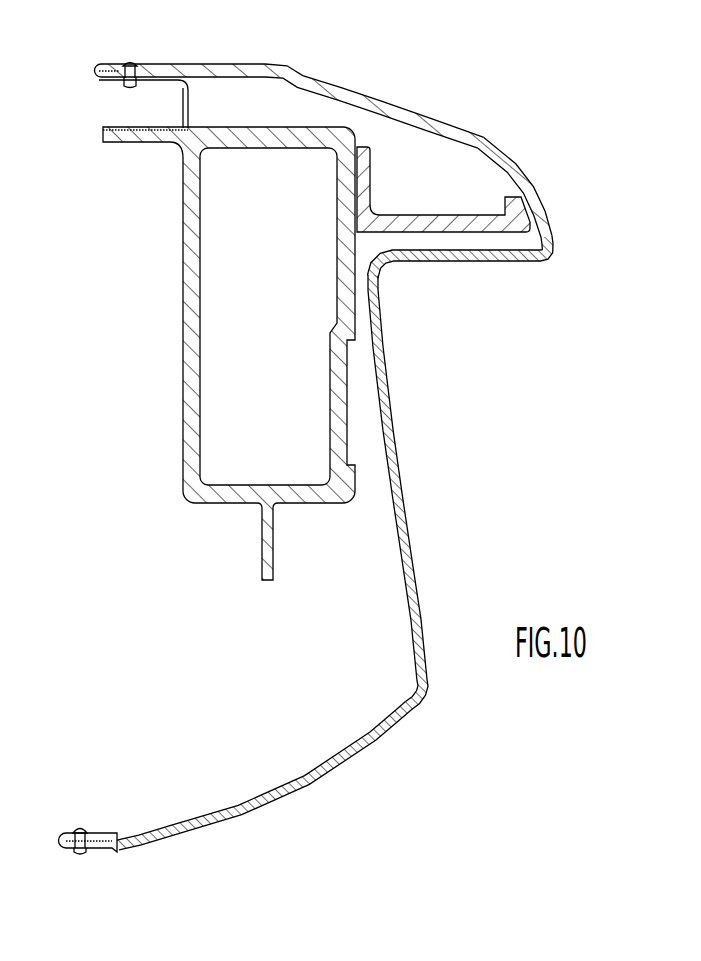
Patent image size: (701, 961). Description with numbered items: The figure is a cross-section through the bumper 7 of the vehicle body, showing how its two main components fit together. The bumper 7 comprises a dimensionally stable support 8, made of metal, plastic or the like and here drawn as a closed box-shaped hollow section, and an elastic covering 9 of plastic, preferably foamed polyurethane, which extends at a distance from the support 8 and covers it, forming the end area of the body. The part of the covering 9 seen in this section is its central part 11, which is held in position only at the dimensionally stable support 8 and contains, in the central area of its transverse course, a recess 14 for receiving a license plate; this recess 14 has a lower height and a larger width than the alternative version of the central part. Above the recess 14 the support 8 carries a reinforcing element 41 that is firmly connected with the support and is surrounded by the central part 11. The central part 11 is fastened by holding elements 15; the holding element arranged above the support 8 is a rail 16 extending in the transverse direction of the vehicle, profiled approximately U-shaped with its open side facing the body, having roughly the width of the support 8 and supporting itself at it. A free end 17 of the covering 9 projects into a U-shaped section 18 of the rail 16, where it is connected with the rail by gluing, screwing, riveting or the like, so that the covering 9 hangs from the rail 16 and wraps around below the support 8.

The bumper 7 is at (270, 65).
The dimensionally stable support 8 is at (183, 312).
The elastic covering 9 is at (522, 161).
The central part 11 is at (545, 215).
The recess 14 is at (393, 466).
The holding elements 15 is at (90, 76).
The rail 16 is at (190, 104).
The free end 17 is at (109, 64).
The U-shaped section 18 is at (148, 63).
The reinforcing element 41 is at (423, 230).